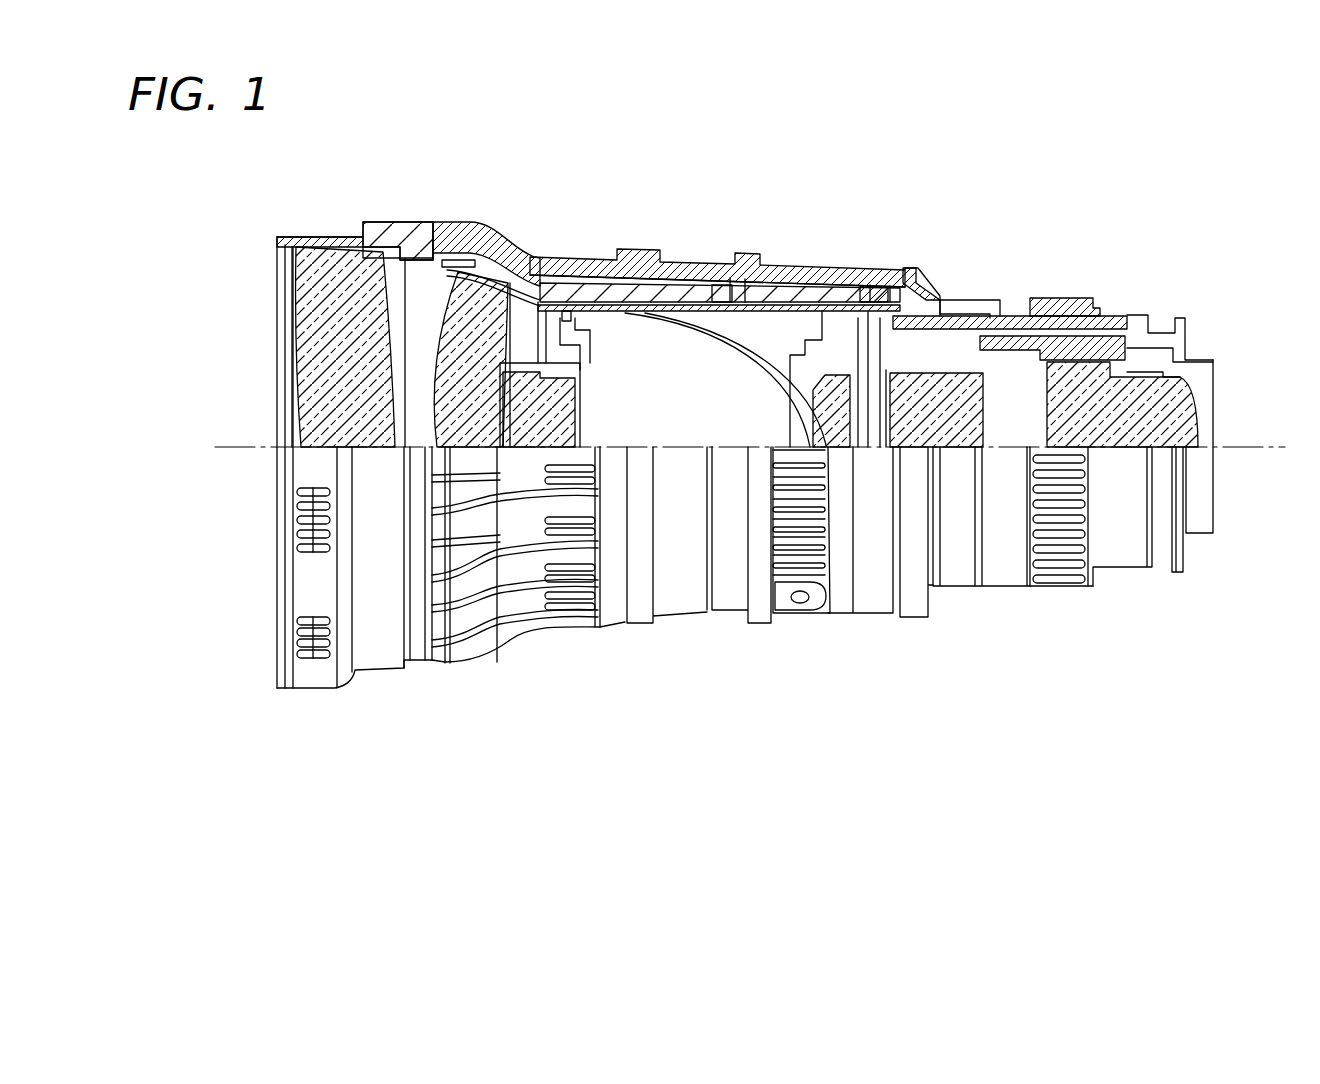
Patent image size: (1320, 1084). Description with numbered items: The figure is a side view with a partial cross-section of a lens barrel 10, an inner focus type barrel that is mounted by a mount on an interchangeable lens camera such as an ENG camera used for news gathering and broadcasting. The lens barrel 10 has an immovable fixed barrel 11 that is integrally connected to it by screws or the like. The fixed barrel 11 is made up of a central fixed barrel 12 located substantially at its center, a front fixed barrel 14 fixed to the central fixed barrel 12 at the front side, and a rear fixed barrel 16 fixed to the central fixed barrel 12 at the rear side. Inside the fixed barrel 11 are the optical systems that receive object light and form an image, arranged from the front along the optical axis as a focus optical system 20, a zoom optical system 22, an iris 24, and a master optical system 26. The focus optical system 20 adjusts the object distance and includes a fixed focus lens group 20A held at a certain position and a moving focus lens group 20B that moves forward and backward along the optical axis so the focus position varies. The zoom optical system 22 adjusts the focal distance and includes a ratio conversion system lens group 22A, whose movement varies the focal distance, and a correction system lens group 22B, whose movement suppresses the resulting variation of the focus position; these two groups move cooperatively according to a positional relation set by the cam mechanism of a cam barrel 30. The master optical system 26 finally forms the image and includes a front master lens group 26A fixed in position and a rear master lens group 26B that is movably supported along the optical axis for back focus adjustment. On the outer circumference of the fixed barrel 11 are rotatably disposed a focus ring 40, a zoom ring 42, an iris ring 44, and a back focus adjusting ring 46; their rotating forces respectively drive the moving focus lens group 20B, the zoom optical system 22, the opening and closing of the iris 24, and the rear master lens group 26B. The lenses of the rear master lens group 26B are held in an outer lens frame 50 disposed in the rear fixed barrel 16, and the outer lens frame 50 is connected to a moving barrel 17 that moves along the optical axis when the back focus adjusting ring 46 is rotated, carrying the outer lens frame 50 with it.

The lens barrel 10 is at (783, 176).
The fixed barrel 11 is at (719, 280).
The central fixed barrel 12 is at (740, 293).
The front fixed barrel 14 is at (578, 259).
The rear fixed barrel 16 is at (962, 316).
The moving barrel 17 is at (1020, 347).
The focus optical system 20 is at (299, 450).
The fixed focus lens group 20A is at (393, 450).
The moving focus lens group 20B is at (431, 450).
The zoom optical system 22 is at (500, 450).
The ratio conversion system lens group 22A is at (574, 450).
The correction system lens group 22B is at (819, 450).
The iris 24 is at (835, 403).
The master optical system 26 is at (893, 450).
The front master lens group 26A is at (983, 450).
The rear master lens group 26B is at (1045, 450).
The cam barrel 30 is at (630, 313).
The focus ring 40 is at (497, 224).
The zoom ring 42 is at (822, 280).
The iris ring 44 is at (908, 268).
The back focus adjusting ring 46 is at (1072, 298).
The outer lens frame 50 is at (1140, 345).